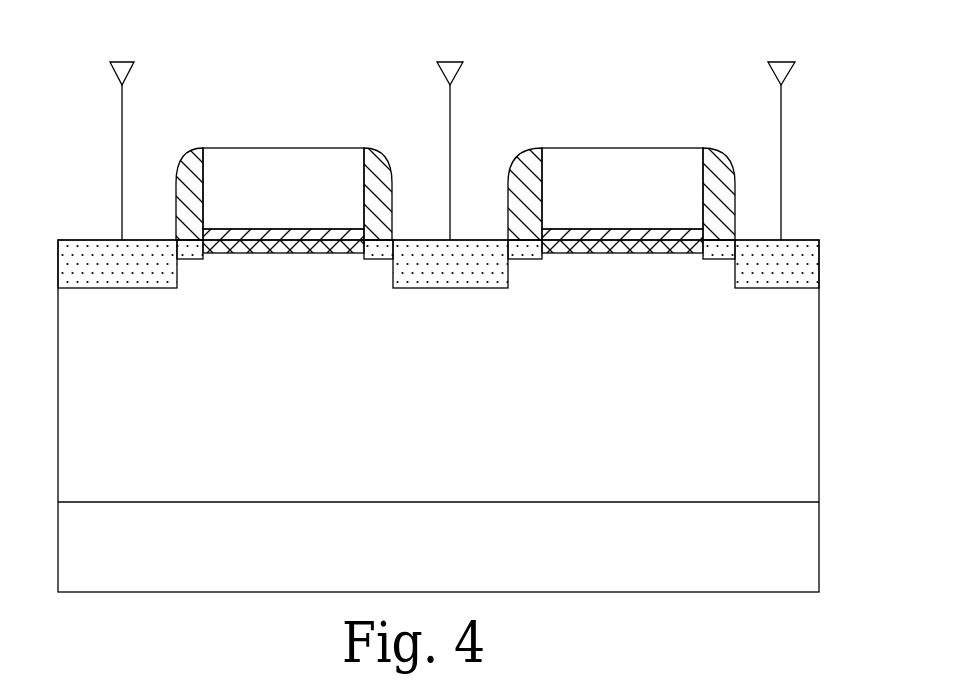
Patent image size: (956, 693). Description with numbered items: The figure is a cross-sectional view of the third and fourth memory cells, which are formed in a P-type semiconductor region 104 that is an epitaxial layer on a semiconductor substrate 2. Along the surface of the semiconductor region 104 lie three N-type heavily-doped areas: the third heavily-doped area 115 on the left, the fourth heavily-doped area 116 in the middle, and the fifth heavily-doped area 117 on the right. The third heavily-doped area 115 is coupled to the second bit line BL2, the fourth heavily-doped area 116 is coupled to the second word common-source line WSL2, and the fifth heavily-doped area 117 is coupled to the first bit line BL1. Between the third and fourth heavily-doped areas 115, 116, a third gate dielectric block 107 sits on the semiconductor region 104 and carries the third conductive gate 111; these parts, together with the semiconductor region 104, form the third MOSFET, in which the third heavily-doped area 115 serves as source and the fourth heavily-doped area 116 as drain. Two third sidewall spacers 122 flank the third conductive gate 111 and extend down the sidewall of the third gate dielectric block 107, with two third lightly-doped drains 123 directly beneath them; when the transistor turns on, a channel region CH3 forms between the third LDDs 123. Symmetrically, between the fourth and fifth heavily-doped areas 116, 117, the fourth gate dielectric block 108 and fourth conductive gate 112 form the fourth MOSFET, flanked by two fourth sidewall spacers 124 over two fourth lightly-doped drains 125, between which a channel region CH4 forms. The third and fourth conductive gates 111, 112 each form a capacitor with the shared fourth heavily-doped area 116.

The semiconductor substrate 2 is at (711, 583).
The semiconductor region 104 is at (430, 492).
The third gate dielectric block 107 is at (268, 233).
The fourth gate dielectric block 108 is at (638, 233).
The third conductive gate 111 is at (300, 155).
The fourth conductive gate 112 is at (590, 155).
The third heavily-doped area 115 is at (108, 290).
The fourth heavily-doped area 116 is at (452, 290).
The fifth heavily-doped area 117 is at (770, 290).
The third sidewall spacers 122 is at (184, 160).
The third lightly-doped drains 123 is at (192, 260).
The fourth sidewall spacers 124 is at (513, 165).
The fourth lightly-doped drains 125 is at (528, 262).
The channel region CH3 is at (275, 255).
The channel region CH4 is at (615, 255).
The first bit line BL1 is at (777, 137).
The second bit line BL2 is at (119, 136).
The second word common-source line WSL2 is at (452, 134).